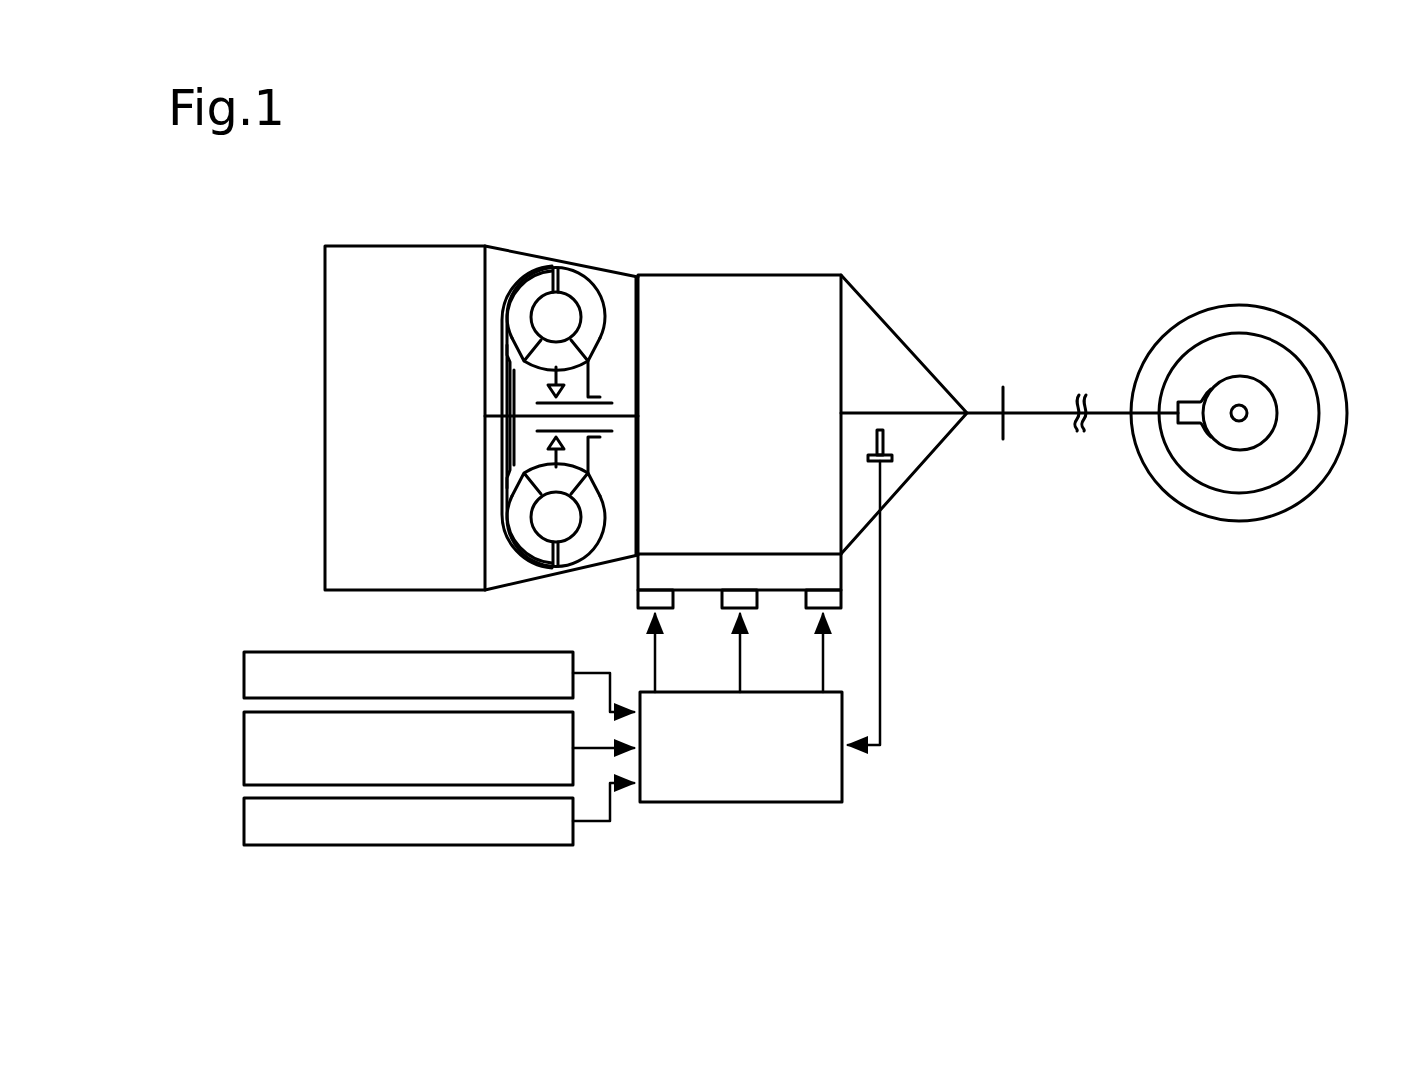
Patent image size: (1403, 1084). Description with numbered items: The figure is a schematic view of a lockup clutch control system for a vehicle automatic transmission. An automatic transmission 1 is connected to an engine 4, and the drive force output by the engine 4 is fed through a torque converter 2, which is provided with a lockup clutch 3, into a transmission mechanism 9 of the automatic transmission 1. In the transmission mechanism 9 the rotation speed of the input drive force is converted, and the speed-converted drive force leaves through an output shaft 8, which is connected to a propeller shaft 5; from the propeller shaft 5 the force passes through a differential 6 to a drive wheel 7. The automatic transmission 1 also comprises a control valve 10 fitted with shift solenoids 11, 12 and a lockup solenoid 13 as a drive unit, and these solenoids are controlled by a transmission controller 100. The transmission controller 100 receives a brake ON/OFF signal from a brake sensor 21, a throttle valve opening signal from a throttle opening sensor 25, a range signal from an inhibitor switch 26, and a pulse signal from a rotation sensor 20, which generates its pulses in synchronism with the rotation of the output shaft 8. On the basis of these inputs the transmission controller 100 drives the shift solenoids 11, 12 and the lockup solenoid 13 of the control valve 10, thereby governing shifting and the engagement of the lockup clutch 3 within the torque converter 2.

The automatic transmission 1 is at (752, 254).
The torque converter 2 is at (580, 290).
The lockup clutch 3 is at (507, 397).
The engine 4 is at (325, 293).
The propeller shaft 5 is at (1034, 413).
The differential 6 is at (1247, 390).
The drive wheel 7 is at (1190, 330).
The output shaft 8 is at (897, 413).
The transmission mechanism 9 is at (677, 290).
The control valve 10 is at (636, 574).
The shift solenoid 11 is at (806, 600).
The shift solenoid 12 is at (718, 603).
The lockup solenoid 13 is at (636, 603).
The rotation sensor 20 is at (892, 457).
The brake sensor 21 is at (244, 672).
The throttle opening sensor 25 is at (244, 748).
The inhibitor switch 26 is at (244, 822).
The transmission controller 100 is at (688, 803).